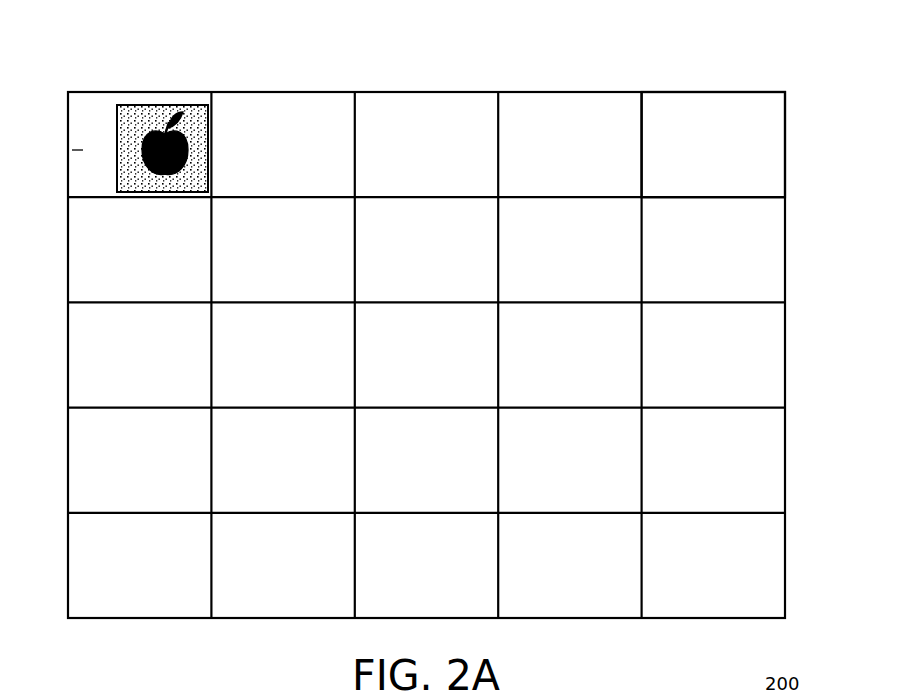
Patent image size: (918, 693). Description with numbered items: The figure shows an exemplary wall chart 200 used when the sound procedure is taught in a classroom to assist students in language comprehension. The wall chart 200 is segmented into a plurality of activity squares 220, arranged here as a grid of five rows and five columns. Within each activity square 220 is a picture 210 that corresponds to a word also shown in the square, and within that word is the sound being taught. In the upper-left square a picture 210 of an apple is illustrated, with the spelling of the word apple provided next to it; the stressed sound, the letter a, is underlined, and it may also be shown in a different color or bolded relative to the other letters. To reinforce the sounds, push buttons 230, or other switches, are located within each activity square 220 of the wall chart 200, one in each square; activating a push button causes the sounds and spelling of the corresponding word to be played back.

The wall chart 200 is at (710, 76).
The picture 210 is at (193, 104).
The activity square 220 is at (773, 173).
The push button 230 is at (78, 174).